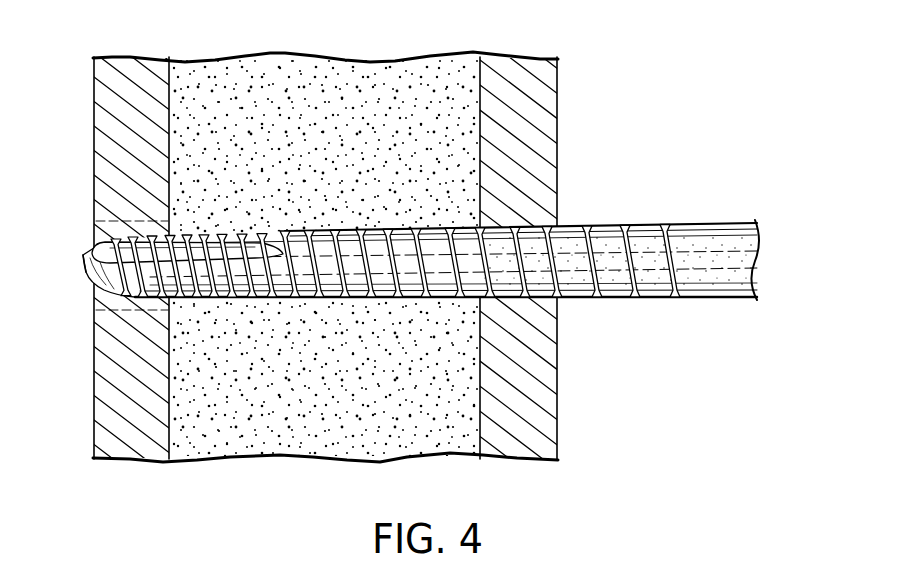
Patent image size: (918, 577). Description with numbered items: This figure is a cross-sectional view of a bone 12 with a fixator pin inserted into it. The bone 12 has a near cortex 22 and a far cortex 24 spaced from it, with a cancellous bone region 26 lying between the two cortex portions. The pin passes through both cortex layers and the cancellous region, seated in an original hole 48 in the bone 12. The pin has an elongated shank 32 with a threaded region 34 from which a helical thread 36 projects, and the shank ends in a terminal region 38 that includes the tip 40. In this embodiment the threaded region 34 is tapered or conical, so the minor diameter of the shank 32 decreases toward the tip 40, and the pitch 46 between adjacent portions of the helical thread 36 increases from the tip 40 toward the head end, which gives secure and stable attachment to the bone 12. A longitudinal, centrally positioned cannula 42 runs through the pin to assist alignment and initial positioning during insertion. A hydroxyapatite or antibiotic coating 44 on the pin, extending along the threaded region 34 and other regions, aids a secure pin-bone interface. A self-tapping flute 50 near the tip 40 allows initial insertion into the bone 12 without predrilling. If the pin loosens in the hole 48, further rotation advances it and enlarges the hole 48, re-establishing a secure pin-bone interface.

The bone 12 is at (351, 253).
The near cortex 22 is at (512, 72).
The far cortex 24 is at (134, 76).
The cancellous bone region 26 is at (330, 167).
The shank 32 is at (741, 299).
The threaded region 34 is at (419, 269).
The helical thread 36 is at (368, 250).
The terminal region 38 is at (82, 280).
The tip 40 is at (85, 269).
The cannula 42 is at (759, 259).
The hydroxyapatite coating 44 is at (720, 275).
The pitch 46 is at (627, 222).
The hole 48 is at (146, 228).
The self-tapping flute 50 is at (137, 249).